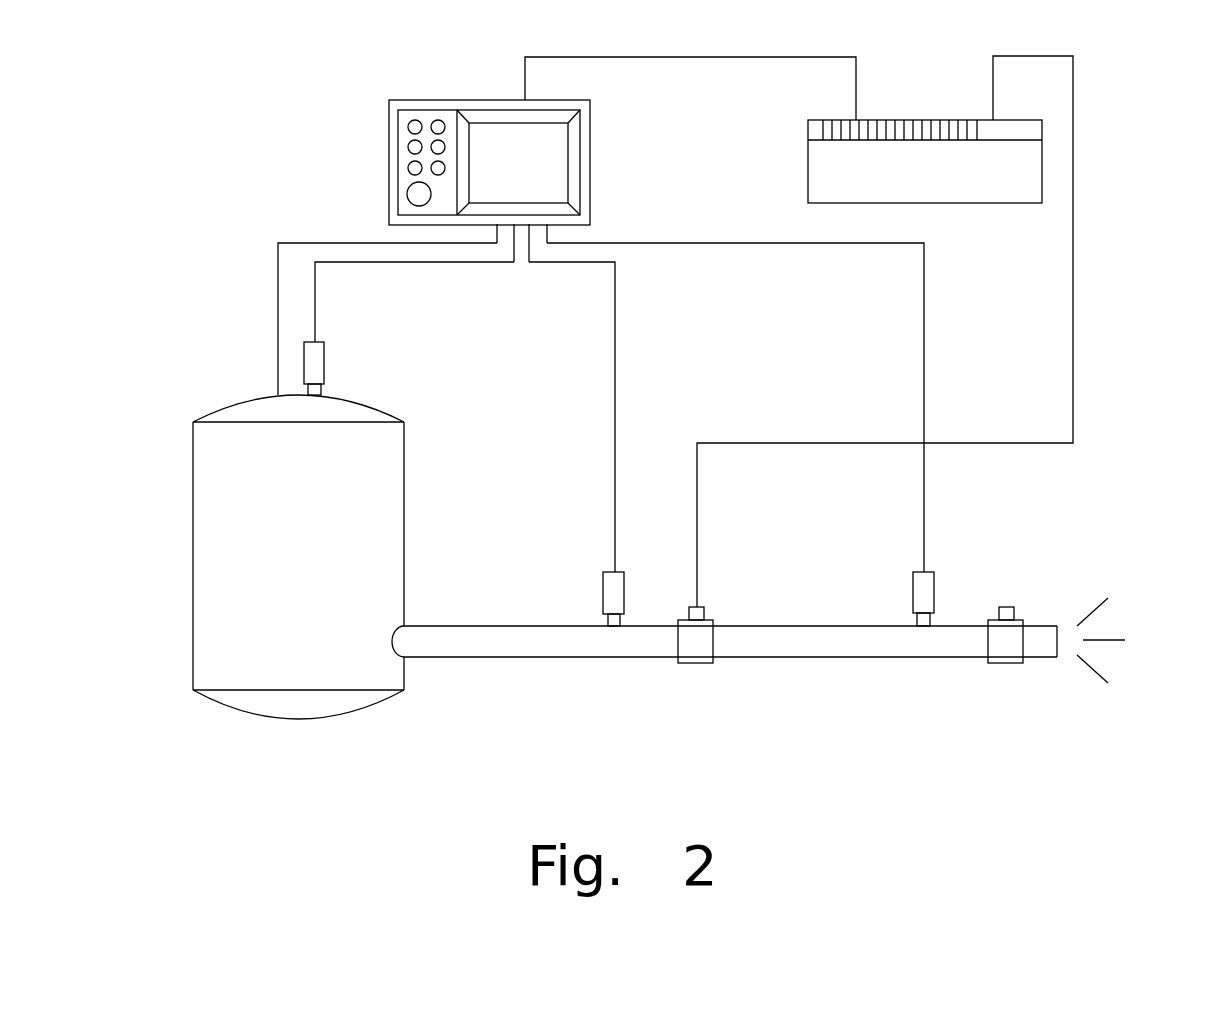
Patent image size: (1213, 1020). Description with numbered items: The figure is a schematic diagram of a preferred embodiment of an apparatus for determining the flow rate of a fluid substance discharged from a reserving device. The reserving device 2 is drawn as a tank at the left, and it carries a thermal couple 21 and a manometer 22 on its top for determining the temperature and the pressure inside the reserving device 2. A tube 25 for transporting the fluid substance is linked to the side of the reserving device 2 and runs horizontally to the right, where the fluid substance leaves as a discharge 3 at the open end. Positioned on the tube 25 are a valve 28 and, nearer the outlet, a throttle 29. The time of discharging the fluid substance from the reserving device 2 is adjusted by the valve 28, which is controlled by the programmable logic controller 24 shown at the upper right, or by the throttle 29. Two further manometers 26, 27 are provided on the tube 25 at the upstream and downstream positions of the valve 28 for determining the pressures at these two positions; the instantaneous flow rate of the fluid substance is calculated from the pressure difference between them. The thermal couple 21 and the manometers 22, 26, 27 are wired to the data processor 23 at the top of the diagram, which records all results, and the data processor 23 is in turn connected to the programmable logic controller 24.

The reserving device 2 is at (230, 552).
The spray 3 is at (1157, 655).
The thermal couple 21 is at (278, 345).
The manometer 22 is at (315, 365).
The data processor 23 is at (508, 133).
The programmable logic controller 24 is at (988, 170).
The tube 25 is at (462, 645).
The manometer 26 is at (610, 590).
The manometer 27 is at (923, 592).
The valve 28 is at (697, 645).
The throttle 29 is at (1007, 645).